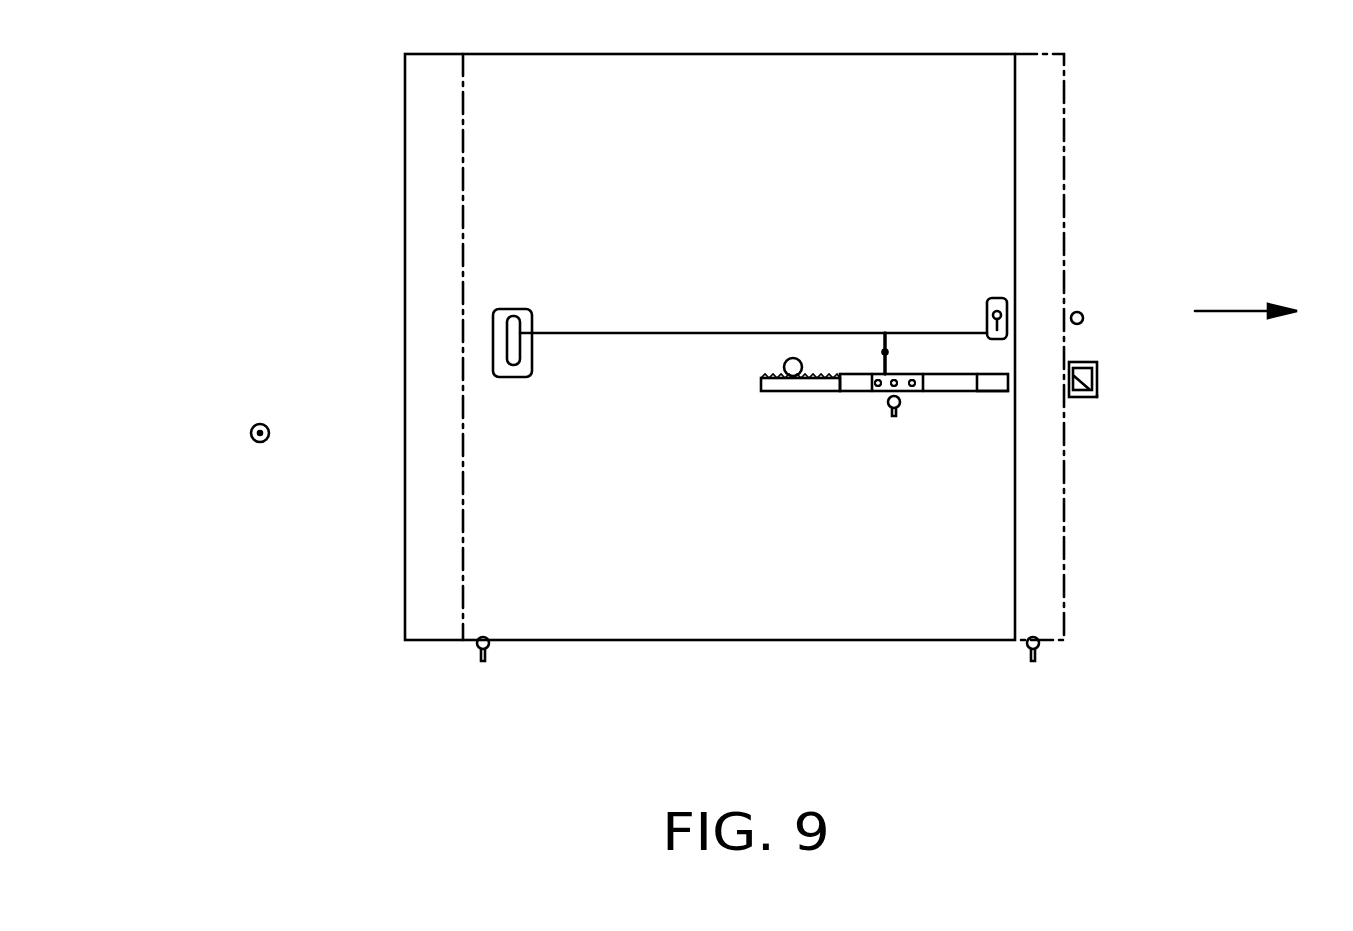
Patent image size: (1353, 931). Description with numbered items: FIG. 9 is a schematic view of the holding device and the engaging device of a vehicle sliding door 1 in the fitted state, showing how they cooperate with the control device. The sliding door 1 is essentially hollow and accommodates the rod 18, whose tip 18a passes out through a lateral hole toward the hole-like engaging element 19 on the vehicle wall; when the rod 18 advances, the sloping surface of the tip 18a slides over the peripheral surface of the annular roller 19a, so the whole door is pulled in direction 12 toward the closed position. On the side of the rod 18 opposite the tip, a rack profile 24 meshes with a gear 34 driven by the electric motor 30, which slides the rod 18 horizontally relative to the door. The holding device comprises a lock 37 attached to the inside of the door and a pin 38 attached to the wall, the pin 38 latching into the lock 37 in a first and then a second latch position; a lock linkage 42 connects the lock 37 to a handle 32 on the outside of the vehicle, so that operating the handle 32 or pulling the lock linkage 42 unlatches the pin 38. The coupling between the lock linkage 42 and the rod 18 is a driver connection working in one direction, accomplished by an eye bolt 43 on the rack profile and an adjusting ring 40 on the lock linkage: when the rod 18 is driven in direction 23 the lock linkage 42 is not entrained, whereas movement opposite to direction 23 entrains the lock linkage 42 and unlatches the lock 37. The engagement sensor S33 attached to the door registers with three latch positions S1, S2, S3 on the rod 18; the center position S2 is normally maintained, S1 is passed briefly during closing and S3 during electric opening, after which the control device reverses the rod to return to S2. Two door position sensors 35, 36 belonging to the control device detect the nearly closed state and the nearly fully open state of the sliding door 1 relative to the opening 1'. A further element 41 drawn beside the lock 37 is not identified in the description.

The sliding door 1 is at (710, 405).
The opening 1' is at (1092, 364).
The direction 12 is at (263, 424).
The rod 18 is at (950, 378).
The tip 18a is at (998, 392).
The hole-like engaging element 19 is at (1097, 372).
The annular roller 19a is at (1097, 395).
The direction 23 is at (1250, 311).
The rack profile 24 is at (828, 374).
The electric motor 30 is at (770, 295).
The gear 34 is at (790, 358).
The handle 32 is at (513, 347).
The first door position sensor 35 is at (1039, 648).
The second door position sensor 36 is at (477, 647).
The lock 37 is at (993, 298).
The pin 38 is at (1083, 316).
The adjusting ring 40 is at (884, 352).
The guide member 41 is at (1002, 312).
The lock linkage 42 is at (604, 332).
The eye bolt 43 is at (890, 362).
The latch position S1 is at (878, 390).
The latch position S2 is at (912, 390).
The latch position S3 is at (900, 392).
The engagement sensor S33 is at (886, 410).